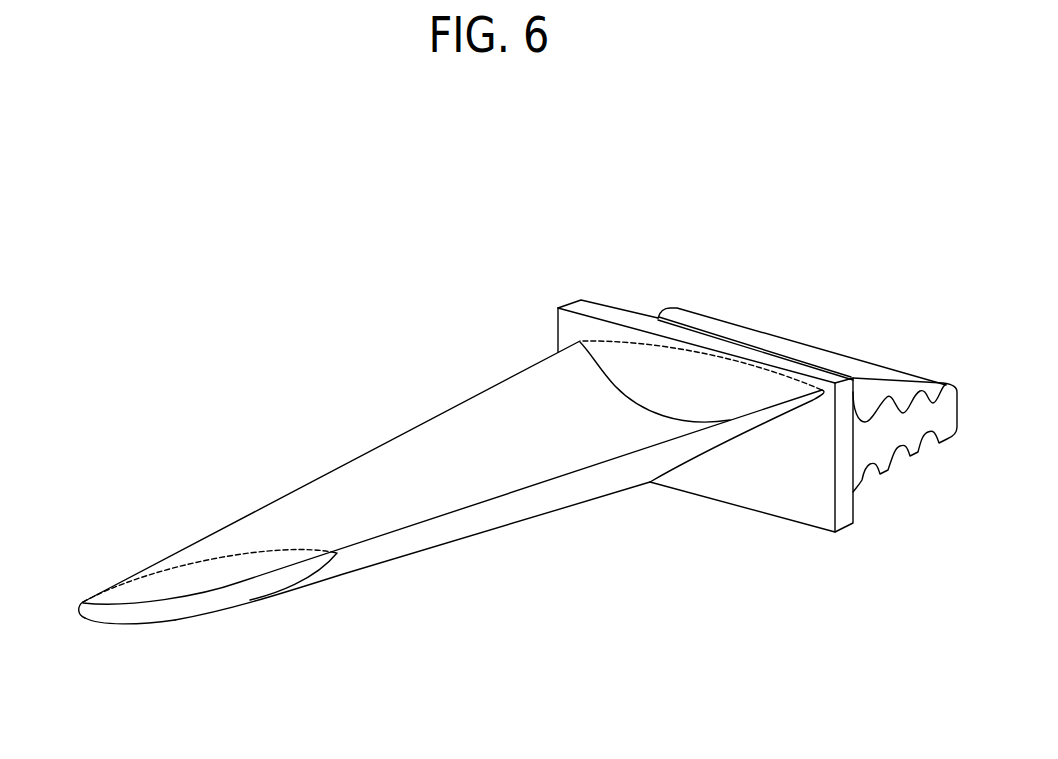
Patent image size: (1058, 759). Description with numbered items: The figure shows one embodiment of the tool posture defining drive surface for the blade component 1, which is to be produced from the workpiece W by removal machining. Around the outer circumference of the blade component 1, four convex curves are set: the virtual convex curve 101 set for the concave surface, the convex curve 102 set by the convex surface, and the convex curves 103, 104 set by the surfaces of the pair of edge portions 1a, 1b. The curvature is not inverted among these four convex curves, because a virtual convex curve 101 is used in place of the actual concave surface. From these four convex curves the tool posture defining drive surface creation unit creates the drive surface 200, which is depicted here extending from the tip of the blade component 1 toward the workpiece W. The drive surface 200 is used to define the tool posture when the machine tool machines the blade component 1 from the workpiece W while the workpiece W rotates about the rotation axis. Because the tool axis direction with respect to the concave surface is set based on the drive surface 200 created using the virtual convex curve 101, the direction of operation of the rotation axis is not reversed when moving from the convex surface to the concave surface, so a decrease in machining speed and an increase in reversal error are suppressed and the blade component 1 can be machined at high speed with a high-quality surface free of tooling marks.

The workpiece W is at (593, 303).
The blade component 1 is at (432, 511).
The edge portion 1a is at (81, 605).
The edge portion 1b is at (512, 492).
The virtual convex curve 101 is at (190, 567).
The convex curve 102 is at (193, 618).
The convex curve 103 is at (83, 620).
The convex curve 104 is at (348, 548).
The drive surface 200 is at (427, 417).